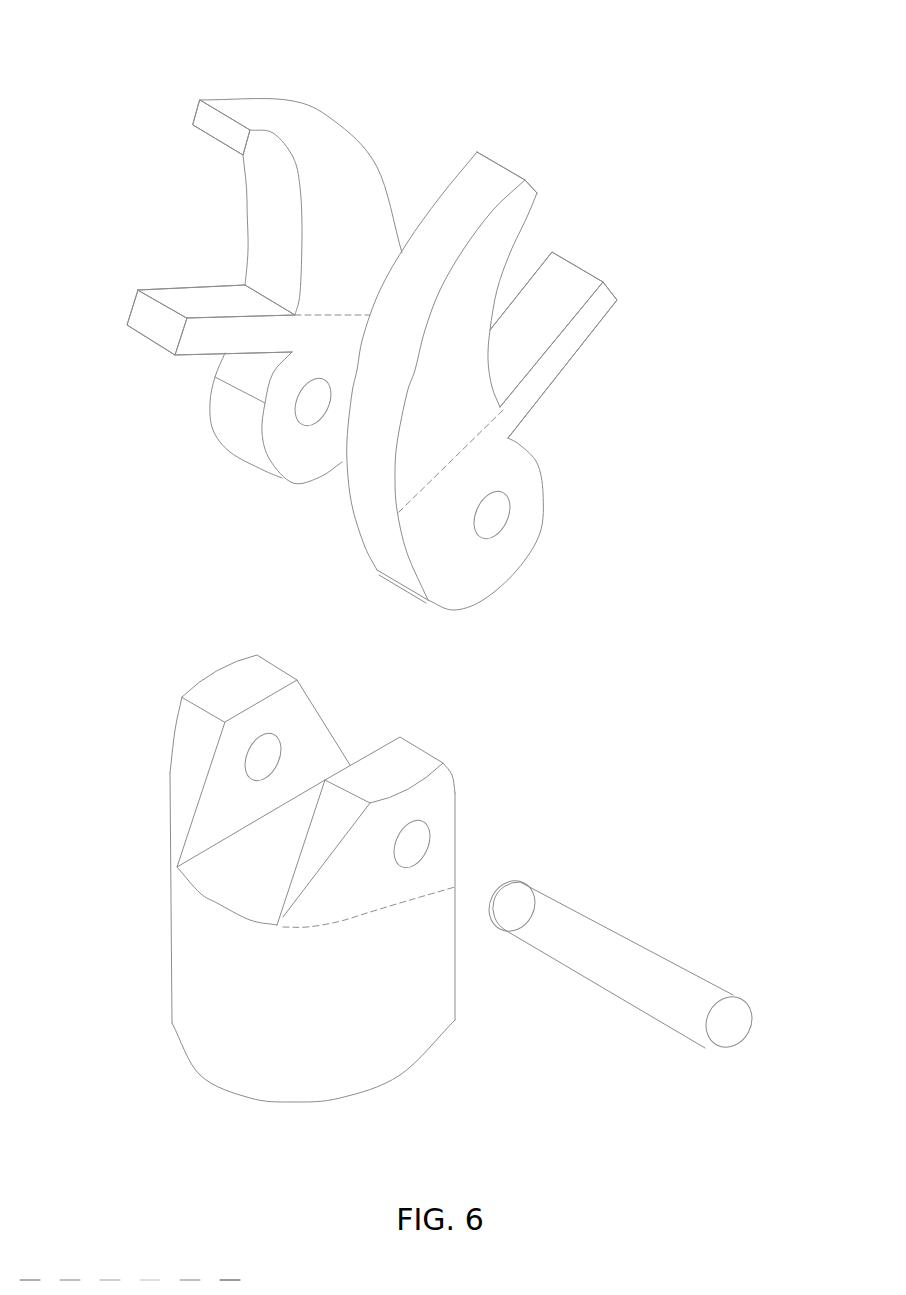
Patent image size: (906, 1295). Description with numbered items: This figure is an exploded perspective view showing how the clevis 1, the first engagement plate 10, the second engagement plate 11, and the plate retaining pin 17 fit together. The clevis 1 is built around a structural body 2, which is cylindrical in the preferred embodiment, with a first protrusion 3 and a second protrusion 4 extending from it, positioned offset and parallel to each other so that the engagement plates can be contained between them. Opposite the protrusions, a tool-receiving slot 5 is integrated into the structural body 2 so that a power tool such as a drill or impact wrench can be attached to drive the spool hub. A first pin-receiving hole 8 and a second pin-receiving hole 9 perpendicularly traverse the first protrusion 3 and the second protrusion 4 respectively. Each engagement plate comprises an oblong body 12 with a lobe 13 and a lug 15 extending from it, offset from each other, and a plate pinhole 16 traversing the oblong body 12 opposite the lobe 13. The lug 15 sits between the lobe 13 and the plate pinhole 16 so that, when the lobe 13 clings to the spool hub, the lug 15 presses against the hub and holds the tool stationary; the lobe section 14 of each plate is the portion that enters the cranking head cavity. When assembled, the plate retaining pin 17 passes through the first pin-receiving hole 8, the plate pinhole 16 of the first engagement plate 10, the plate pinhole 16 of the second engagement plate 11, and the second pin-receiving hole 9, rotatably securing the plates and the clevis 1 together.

The clevis 1 is at (117, 867).
The structural body 2 is at (185, 973).
The first protrusion 3 is at (338, 918).
The second protrusion 4 is at (313, 726).
The tool-receiving slot 5 is at (278, 1122).
The first pin-receiving hole 8 is at (405, 850).
The second pin-receiving hole 9 is at (265, 768).
The first engagement plate 10 is at (573, 555).
The second engagement plate 11 is at (240, 62).
The oblong body 12 is at (347, 145).
The lobe 13 is at (207, 123).
The lobe section 14 is at (346, 300).
The lug 15 is at (147, 312).
The plate pinhole 16 is at (317, 405).
The plate retaining pin 17 is at (565, 913).